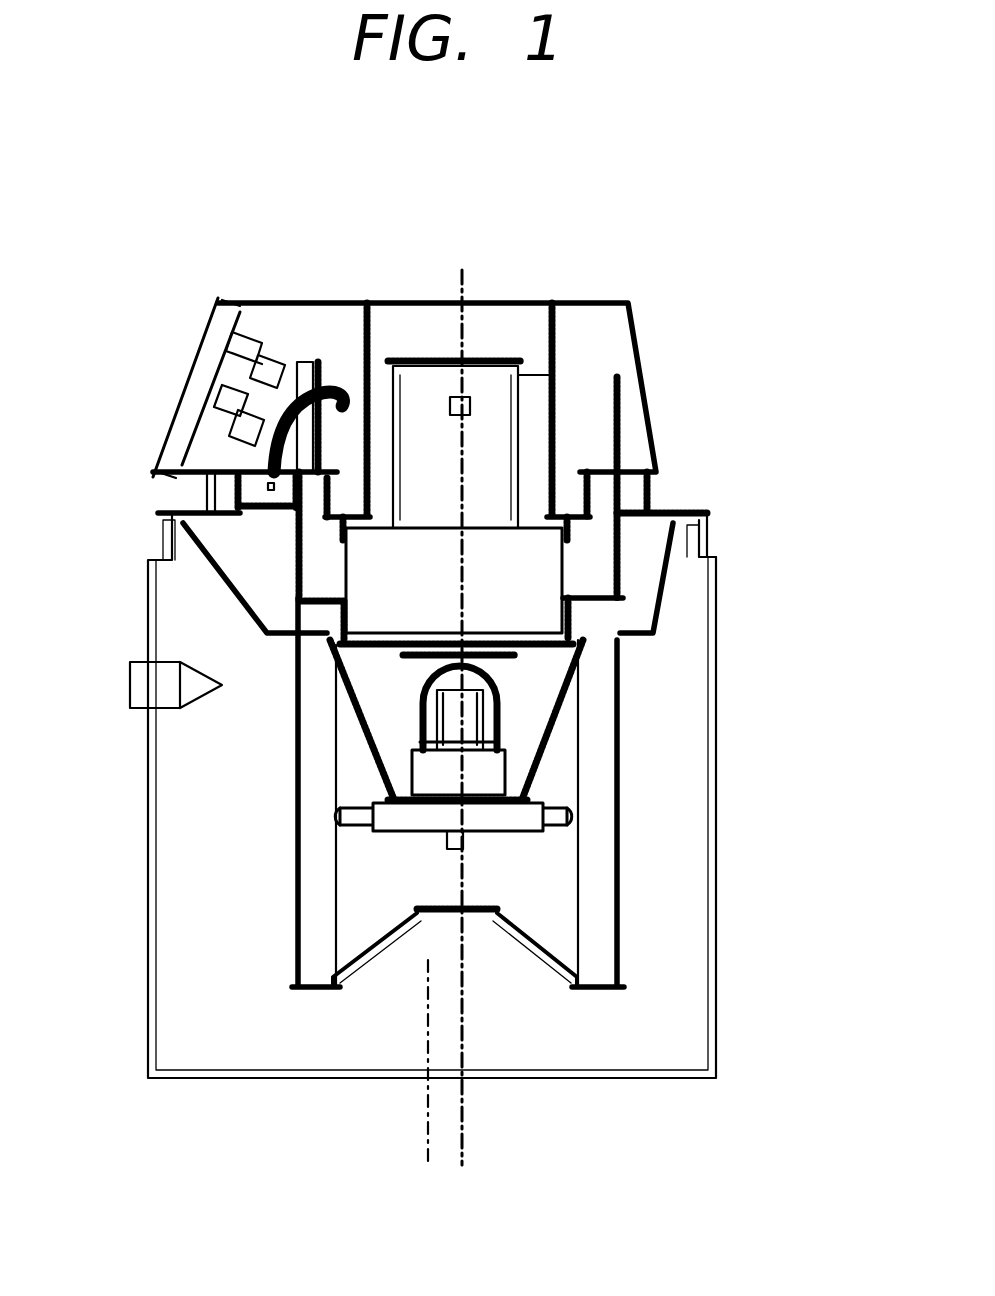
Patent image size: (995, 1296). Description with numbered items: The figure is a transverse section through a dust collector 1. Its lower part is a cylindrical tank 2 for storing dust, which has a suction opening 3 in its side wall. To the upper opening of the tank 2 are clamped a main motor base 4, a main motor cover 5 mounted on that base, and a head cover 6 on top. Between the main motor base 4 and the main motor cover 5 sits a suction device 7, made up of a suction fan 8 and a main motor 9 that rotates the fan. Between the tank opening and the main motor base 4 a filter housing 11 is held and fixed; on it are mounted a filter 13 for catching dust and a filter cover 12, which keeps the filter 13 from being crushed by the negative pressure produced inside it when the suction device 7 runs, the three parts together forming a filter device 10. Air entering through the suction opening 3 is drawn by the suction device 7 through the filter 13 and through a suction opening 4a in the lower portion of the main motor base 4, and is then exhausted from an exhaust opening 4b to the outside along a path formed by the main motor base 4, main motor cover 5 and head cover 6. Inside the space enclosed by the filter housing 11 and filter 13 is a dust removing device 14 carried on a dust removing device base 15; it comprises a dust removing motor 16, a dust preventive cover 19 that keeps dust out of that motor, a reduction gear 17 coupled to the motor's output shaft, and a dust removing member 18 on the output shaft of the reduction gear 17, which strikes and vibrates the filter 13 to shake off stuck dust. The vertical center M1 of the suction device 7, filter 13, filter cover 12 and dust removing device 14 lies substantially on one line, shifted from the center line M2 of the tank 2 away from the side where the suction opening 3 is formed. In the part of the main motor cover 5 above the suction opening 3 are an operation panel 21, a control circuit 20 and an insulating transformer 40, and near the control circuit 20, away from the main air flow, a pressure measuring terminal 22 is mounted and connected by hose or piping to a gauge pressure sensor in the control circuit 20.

The dust collector 1 is at (528, 272).
The tank 2 is at (716, 1022).
The suction opening 3 is at (130, 683).
The main motor base 4 is at (638, 612).
The suction opening 4a is at (515, 652).
The exhaust opening 4b is at (652, 492).
The main motor cover 5 is at (558, 447).
The head cover 6 is at (607, 300).
The suction device 7 is at (495, 410).
The suction fan 8 is at (710, 543).
The main motor 9 is at (418, 390).
The filter device 10 is at (615, 752).
The filter housing 11 is at (232, 592).
The filter cover 12 is at (513, 912).
The filter 13 is at (602, 862).
The dust removing device 14 is at (397, 845).
The dust removing device base 15 is at (400, 776).
The dust removing motor 16 is at (372, 742).
The reduction gear 17 is at (493, 762).
The dust removing member 18 is at (372, 828).
The dust preventive cover 19 is at (497, 698).
The control circuit 20 is at (307, 360).
The operation panel 21 is at (215, 345).
The pressure measuring terminal 22 is at (243, 520).
The insulating transformer 40 is at (290, 395).
The vertical-direction center M1 is at (465, 1140).
The center line M2 is at (428, 1140).